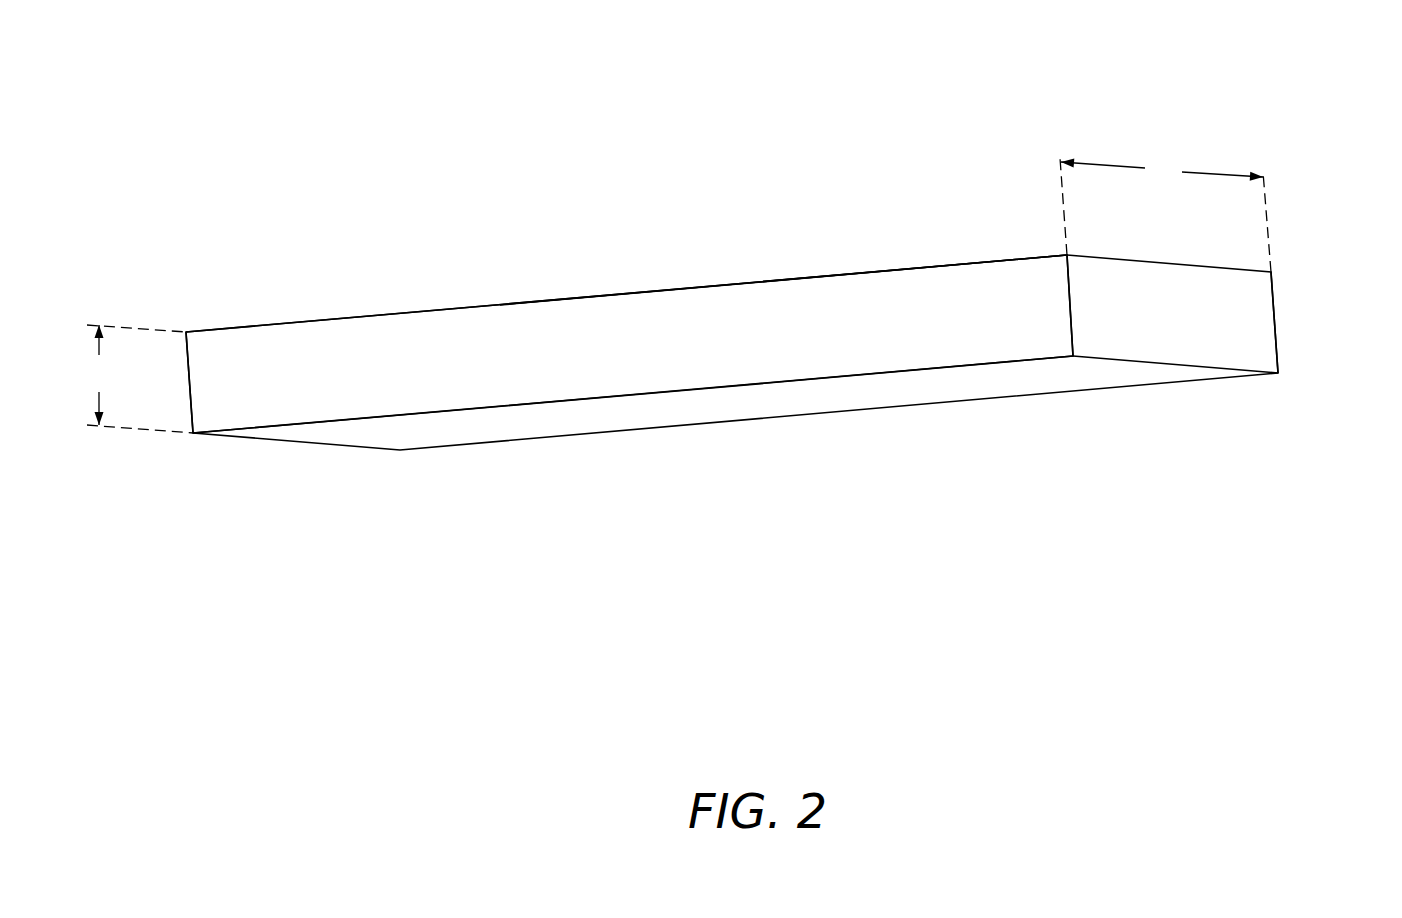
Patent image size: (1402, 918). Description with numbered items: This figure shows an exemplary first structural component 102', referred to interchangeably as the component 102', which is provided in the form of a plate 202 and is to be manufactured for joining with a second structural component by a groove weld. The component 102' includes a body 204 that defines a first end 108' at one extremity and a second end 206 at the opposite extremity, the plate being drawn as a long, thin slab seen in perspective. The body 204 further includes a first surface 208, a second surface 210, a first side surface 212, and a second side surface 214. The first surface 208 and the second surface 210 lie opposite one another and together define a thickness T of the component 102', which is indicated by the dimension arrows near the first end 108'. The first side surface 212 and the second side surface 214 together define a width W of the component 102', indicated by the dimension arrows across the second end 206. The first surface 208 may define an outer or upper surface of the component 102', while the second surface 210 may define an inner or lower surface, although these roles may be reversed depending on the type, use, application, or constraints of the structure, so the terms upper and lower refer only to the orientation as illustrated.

The first structural component 102' is at (757, 246).
The first end 108' is at (139, 418).
The plate 202 is at (364, 298).
The body 204 is at (605, 420).
The second end 206 is at (1195, 331).
The first surface 208 is at (620, 292).
The second surface 210 is at (697, 410).
The first side surface 212 is at (548, 362).
The second side surface 214 is at (1275, 320).